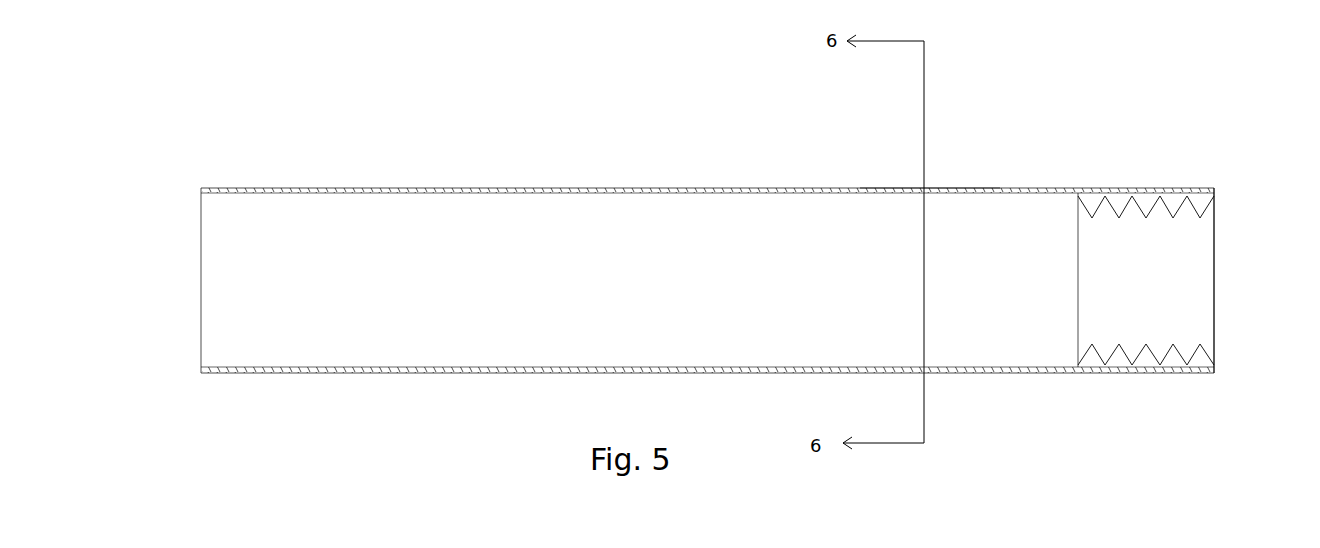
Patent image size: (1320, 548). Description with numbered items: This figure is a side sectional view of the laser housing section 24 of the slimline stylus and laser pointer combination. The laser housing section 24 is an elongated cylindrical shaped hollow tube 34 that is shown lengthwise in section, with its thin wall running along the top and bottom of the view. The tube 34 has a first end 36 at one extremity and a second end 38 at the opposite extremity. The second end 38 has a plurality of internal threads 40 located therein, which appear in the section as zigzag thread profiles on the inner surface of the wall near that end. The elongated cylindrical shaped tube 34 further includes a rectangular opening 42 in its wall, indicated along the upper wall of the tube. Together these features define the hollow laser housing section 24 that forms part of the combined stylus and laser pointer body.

The laser housing section 24 is at (344, 377).
The elongated cylindrical shaped hollow tube 34 is at (505, 377).
The first end 36 is at (199, 303).
The second end 38 is at (1218, 266).
The internal threads 40 is at (1172, 207).
The rectangular opening 42 is at (938, 184).